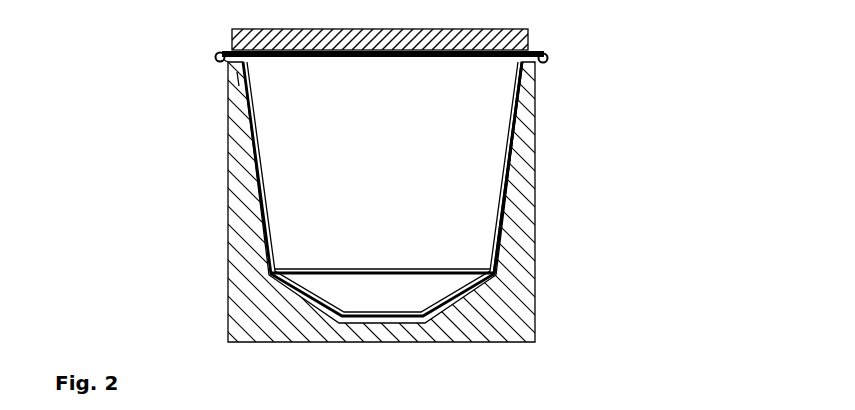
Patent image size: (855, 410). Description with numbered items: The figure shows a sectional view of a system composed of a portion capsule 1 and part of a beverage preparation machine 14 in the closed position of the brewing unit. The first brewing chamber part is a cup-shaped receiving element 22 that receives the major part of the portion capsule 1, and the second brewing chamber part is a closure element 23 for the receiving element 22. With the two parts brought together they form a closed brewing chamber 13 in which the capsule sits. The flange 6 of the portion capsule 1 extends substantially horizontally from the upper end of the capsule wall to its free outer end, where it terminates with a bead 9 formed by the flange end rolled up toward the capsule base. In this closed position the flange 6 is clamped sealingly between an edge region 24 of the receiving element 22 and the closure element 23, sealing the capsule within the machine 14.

The portion capsule 1 is at (472, 189).
The flange 6 is at (533, 64).
The bead 9 is at (219, 63).
The brewing chamber 13 is at (512, 134).
The beverage preparation machine 14 is at (407, 176).
The receiving element 22 is at (525, 264).
The closure element 23 is at (478, 29).
The edge region 24 is at (236, 78).